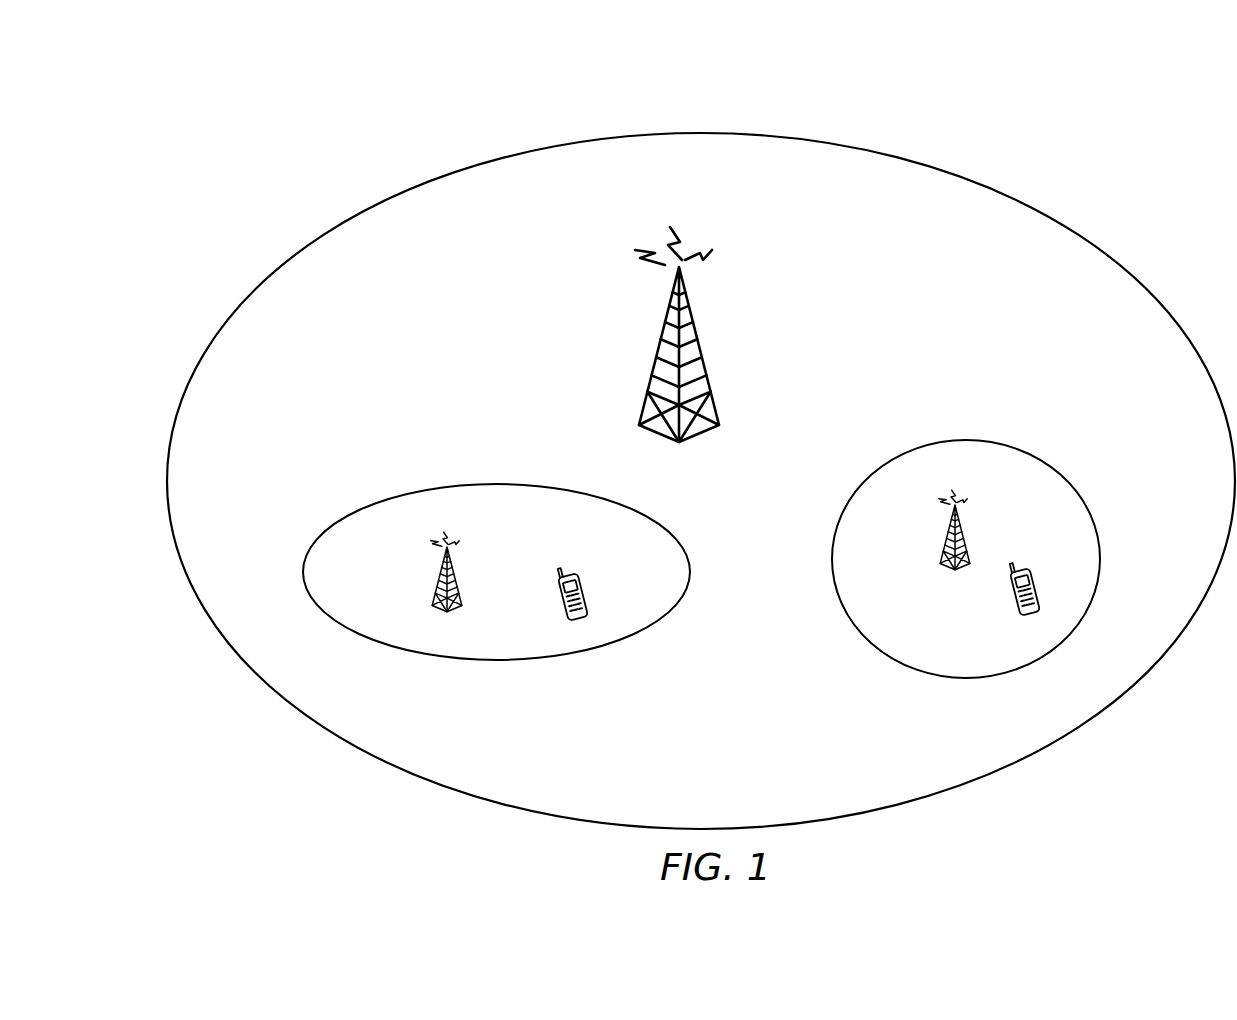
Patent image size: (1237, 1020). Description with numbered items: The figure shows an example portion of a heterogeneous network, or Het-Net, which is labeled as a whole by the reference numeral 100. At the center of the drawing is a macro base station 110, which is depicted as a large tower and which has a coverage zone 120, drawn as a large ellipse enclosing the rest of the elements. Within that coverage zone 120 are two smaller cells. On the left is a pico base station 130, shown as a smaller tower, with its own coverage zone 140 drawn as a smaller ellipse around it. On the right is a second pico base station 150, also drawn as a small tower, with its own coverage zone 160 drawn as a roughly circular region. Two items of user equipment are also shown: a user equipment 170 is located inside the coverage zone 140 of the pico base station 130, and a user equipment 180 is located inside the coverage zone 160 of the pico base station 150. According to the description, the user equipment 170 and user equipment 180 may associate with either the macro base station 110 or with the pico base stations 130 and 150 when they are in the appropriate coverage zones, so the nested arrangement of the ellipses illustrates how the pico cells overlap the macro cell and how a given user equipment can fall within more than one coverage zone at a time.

The wireless communication system 100 is at (1080, 180).
The macro base station 110 is at (705, 248).
The coverage zone 120 is at (902, 157).
The pico base station 130 is at (420, 547).
The coverage zone 140 is at (550, 484).
The pico base station 150 is at (930, 500).
The coverage zone 160 is at (1030, 453).
The user equipment 170 is at (581, 581).
The user equipment 180 is at (1032, 572).